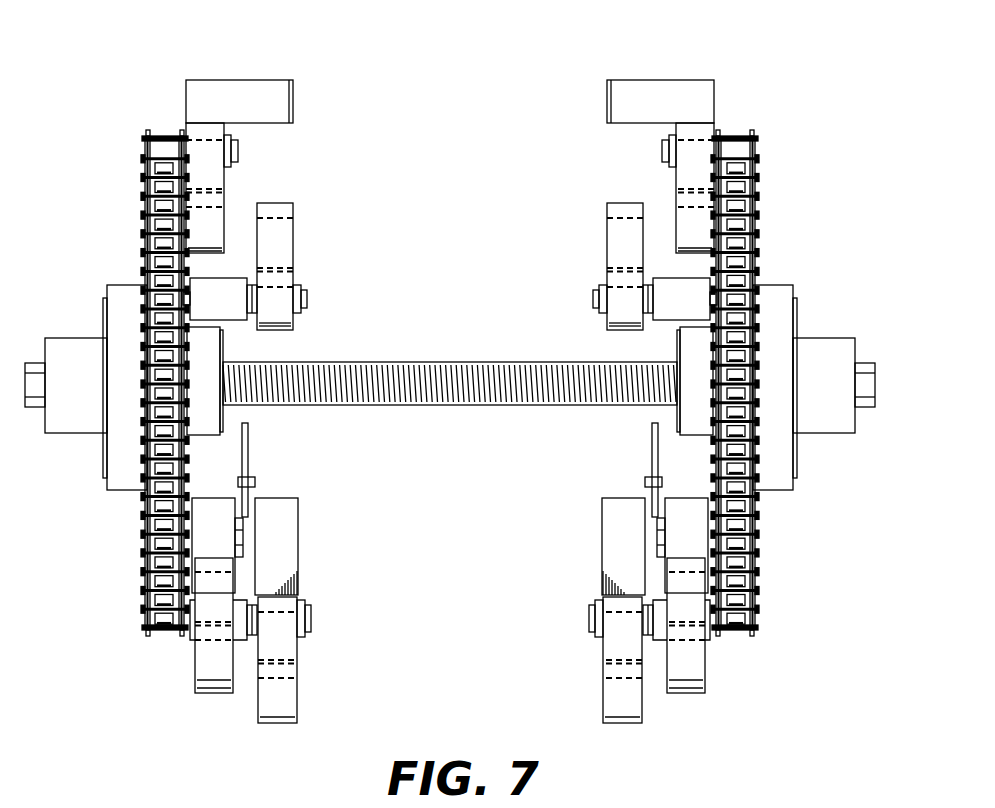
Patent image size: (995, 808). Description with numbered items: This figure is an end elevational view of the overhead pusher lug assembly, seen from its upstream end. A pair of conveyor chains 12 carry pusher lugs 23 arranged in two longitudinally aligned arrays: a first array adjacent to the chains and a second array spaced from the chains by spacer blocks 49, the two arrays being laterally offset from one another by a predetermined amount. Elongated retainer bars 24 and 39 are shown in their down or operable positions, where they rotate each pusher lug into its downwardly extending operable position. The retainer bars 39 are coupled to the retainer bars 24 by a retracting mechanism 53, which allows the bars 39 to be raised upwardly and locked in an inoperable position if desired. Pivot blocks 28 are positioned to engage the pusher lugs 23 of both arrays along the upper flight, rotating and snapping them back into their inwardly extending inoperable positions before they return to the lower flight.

The conveyor chain 12 is at (133, 252).
The pusher lug 23 is at (620, 700).
The retainer bar 24 is at (213, 507).
The pivot block 28 is at (288, 103).
The retainer bar 39 is at (280, 577).
The spacer block 49 is at (233, 308).
The retracting mechanism 53 is at (266, 458).